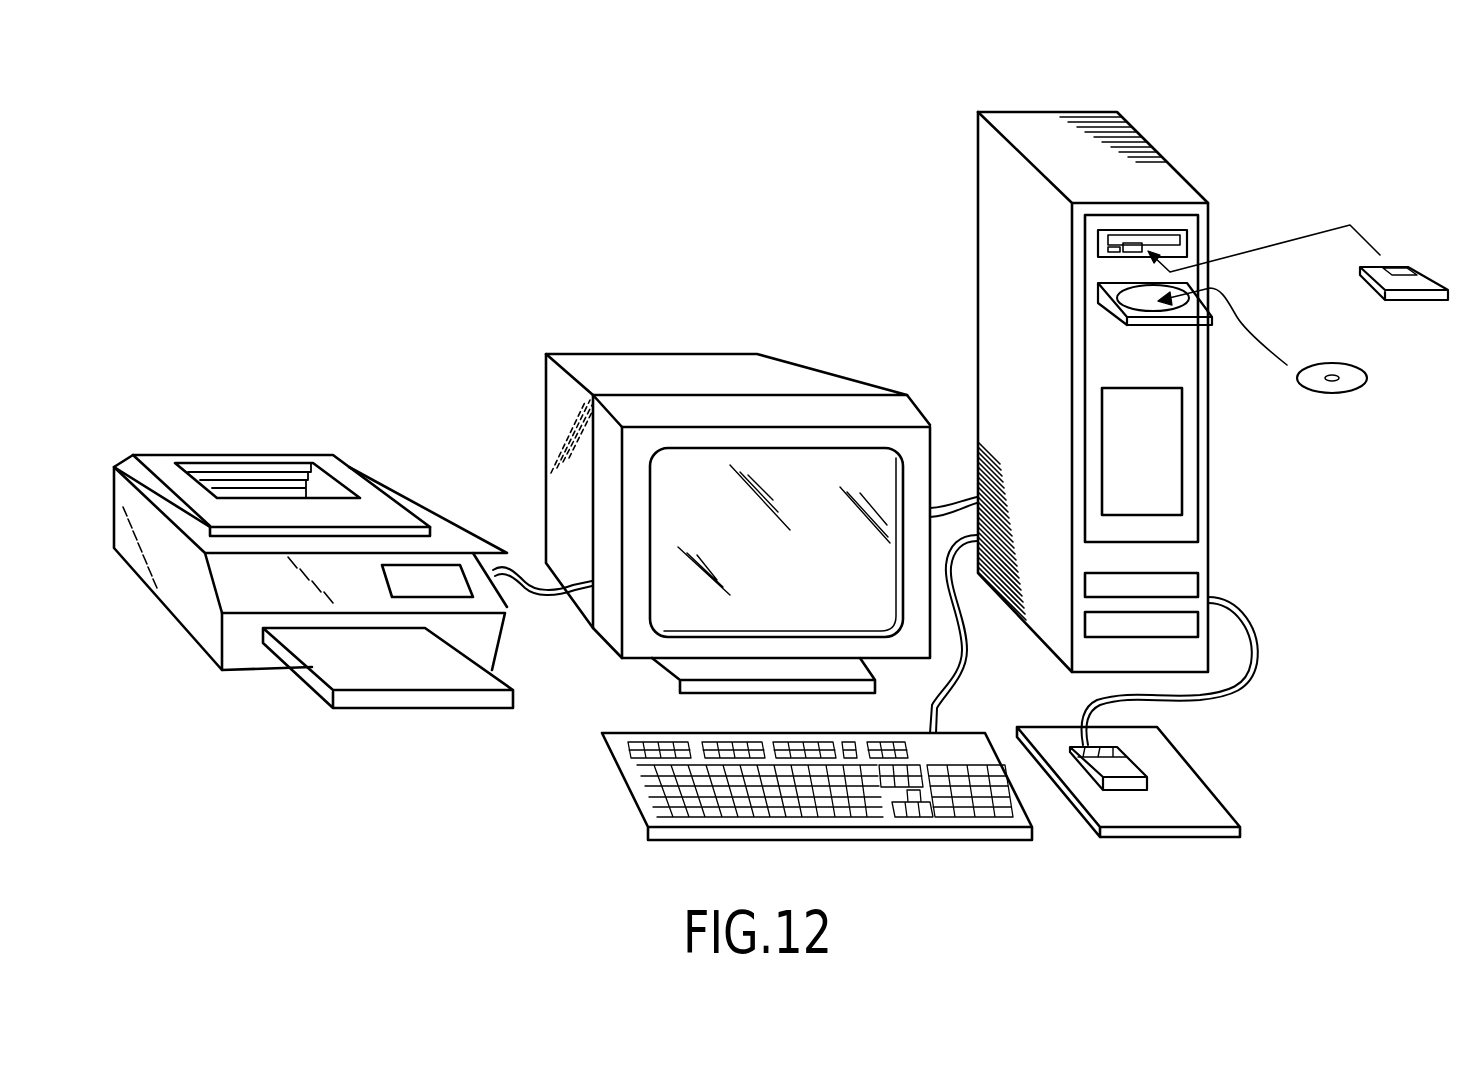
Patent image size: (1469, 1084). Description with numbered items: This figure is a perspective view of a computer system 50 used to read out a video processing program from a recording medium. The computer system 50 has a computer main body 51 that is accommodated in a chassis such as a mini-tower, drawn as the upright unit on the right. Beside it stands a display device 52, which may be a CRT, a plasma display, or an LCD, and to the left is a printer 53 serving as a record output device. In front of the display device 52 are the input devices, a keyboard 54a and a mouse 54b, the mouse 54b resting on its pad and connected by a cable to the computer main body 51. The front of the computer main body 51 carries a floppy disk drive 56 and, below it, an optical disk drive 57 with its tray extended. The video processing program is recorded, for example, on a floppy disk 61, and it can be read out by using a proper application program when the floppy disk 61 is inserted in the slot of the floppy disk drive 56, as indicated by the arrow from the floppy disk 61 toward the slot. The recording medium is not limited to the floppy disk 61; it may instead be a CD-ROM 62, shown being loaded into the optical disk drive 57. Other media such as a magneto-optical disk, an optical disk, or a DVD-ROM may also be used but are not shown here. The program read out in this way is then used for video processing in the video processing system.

The computer system 50 is at (886, 170).
The computer main body 51 is at (1035, 135).
The display device 52 is at (677, 377).
The printer 53 is at (383, 513).
The keyboard 54a is at (608, 773).
The mouse 54b is at (1133, 768).
The floppy disk drive 56 is at (1187, 231).
The optical disk drive 57 is at (1168, 328).
The floppy disk 61 is at (1427, 273).
The CD-ROM 62 is at (1342, 393).